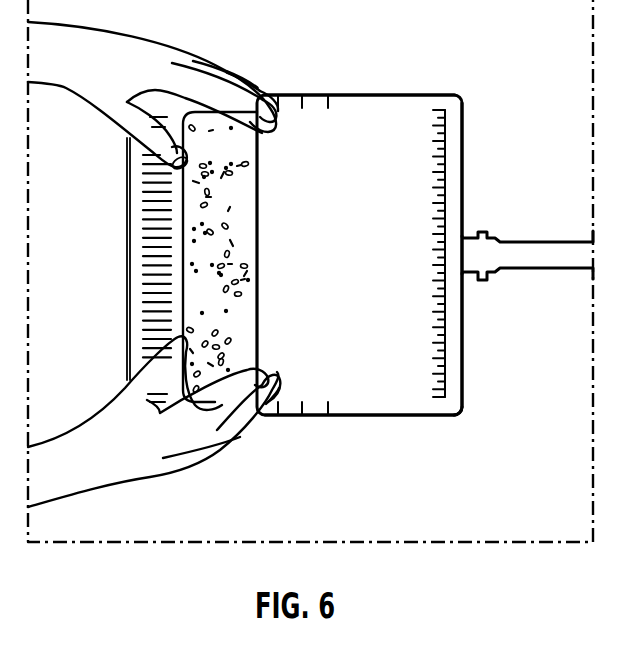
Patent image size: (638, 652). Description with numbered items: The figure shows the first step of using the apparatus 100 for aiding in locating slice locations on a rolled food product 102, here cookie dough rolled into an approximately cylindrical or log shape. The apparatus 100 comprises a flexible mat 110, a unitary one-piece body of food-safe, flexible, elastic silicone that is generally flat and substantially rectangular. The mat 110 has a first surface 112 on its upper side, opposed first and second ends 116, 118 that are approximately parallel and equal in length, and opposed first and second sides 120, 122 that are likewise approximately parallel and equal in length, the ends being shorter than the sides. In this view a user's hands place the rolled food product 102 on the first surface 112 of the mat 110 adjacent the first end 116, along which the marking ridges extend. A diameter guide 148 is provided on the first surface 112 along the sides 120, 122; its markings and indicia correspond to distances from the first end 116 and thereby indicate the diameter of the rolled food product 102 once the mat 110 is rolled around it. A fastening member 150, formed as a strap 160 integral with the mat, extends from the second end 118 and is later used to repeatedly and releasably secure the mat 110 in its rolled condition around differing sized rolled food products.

The apparatus 100 is at (480, 44).
The rolled food product 102 is at (257, 263).
The mat 110 is at (398, 112).
The first surface 112 is at (360, 395).
The first end 116 is at (127, 295).
The second end 118 is at (462, 357).
The first side 120 is at (438, 418).
The second side 122 is at (357, 92).
The diameter guide 148 is at (278, 410).
The fastening member 150 is at (150, 243).
The strap 160 is at (562, 240).